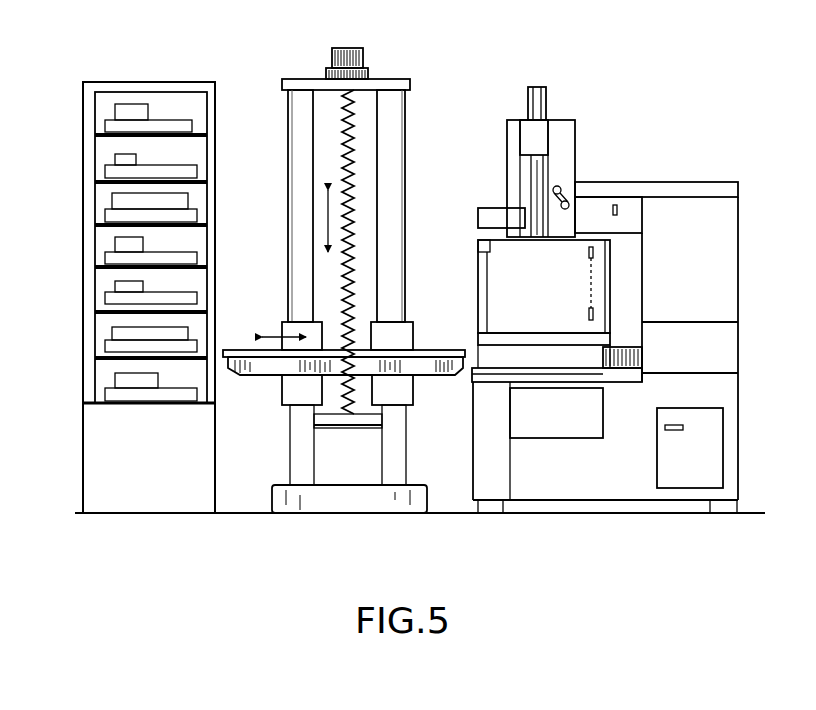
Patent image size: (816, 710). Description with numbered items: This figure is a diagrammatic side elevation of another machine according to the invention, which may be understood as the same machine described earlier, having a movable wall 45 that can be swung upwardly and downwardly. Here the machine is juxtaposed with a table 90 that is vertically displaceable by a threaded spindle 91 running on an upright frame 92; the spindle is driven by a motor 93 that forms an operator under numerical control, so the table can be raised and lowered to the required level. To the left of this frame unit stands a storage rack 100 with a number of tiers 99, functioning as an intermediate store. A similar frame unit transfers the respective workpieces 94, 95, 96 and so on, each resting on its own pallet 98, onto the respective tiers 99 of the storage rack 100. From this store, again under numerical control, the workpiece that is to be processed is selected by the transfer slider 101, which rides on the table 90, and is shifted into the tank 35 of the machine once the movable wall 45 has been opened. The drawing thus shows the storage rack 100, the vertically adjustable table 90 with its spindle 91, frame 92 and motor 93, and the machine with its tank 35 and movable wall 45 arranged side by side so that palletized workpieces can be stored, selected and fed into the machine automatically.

The tank 35 is at (511, 300).
The movable wall 45 is at (586, 300).
The table 90 is at (433, 348).
The threaded spindle 91 is at (350, 116).
The upright frame 92 is at (401, 135).
The motor 93 is at (357, 50).
The workpiece 94 is at (133, 110).
The workpiece 95 is at (120, 159).
The workpiece 96 is at (122, 202).
The pallet 98 is at (175, 124).
The tier 99 is at (204, 134).
The storage rack 100 is at (81, 377).
The transfer slider 101 is at (248, 346).